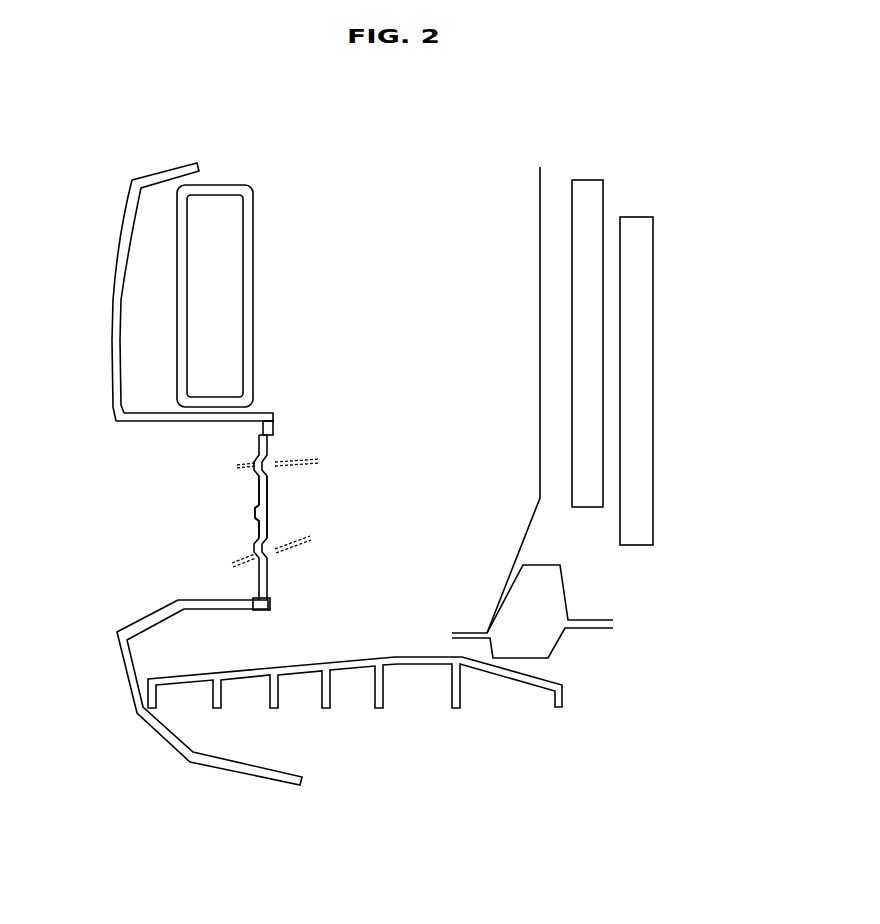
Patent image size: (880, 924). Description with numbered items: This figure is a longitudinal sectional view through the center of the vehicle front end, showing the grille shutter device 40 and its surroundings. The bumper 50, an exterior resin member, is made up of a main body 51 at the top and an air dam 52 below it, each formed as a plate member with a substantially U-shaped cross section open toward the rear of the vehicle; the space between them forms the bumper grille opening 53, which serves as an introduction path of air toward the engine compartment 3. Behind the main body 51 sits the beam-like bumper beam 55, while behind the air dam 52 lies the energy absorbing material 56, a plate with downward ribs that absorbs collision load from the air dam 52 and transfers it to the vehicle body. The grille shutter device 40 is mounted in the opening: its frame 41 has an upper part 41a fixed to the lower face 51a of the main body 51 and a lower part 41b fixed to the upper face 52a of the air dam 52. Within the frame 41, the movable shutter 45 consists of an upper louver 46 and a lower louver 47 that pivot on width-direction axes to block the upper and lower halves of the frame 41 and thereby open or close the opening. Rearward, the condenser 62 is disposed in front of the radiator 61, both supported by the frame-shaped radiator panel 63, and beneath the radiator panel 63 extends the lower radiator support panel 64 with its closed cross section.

The engine compartment 3 is at (608, 383).
The grille shutter device 40 is at (255, 482).
The frame 41 is at (247, 432).
The upper part of frame 41a is at (275, 426).
The lower part of frame 41b is at (272, 592).
The movable shutter 45 is at (343, 485).
The upper louver 46 is at (270, 487).
The lower louver 47 is at (270, 525).
The bumper 50 is at (184, 306).
The main body 51 is at (112, 320).
The lower face of main body 51a is at (205, 420).
The air dam 52 is at (118, 652).
The upper face of air dam 52a is at (200, 600).
The bumper grille opening 53 is at (307, 645).
The bumper beam 55 is at (255, 213).
The energy absorbing material 56 is at (413, 668).
The radiator 61 is at (655, 320).
The condenser 62 is at (590, 180).
The radiator panel 63 is at (540, 180).
The lower radiator support panel 64 is at (565, 580).